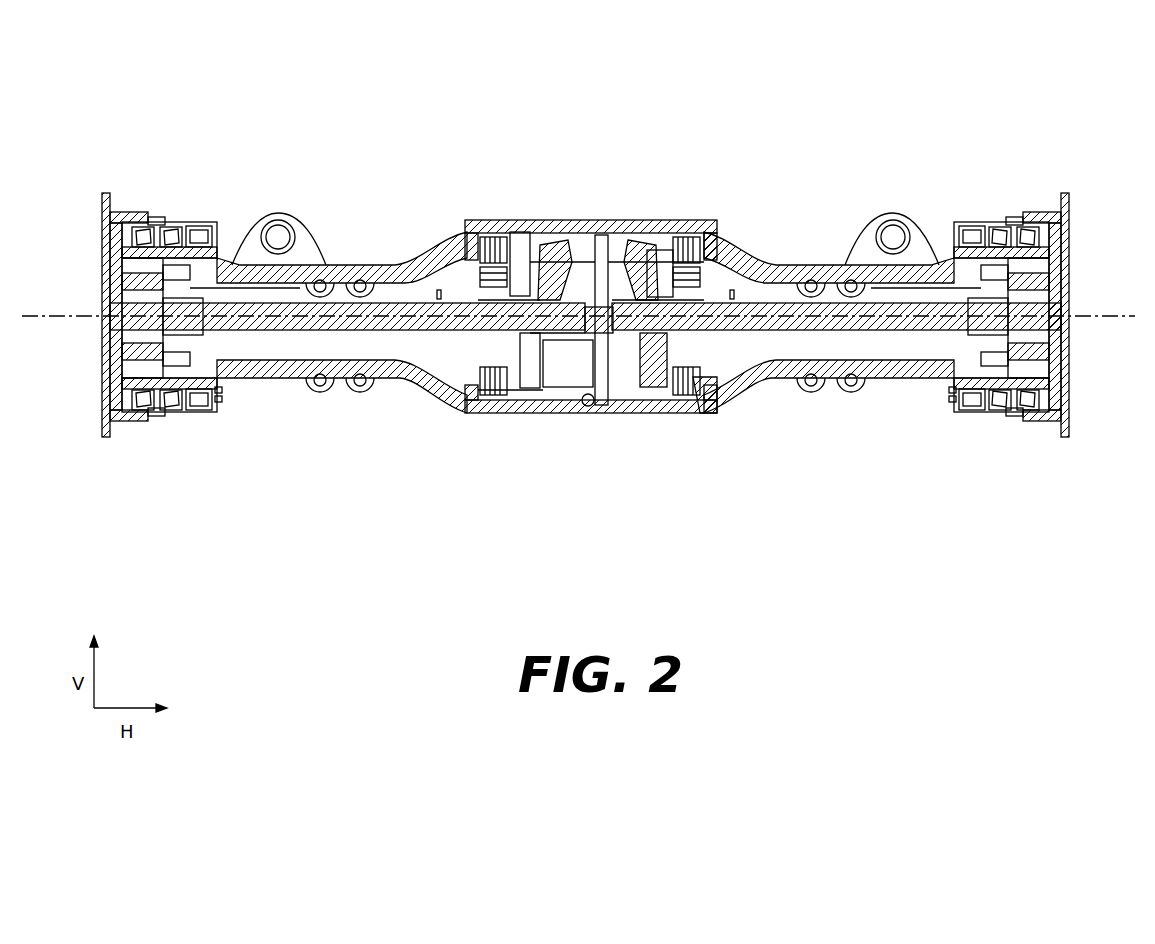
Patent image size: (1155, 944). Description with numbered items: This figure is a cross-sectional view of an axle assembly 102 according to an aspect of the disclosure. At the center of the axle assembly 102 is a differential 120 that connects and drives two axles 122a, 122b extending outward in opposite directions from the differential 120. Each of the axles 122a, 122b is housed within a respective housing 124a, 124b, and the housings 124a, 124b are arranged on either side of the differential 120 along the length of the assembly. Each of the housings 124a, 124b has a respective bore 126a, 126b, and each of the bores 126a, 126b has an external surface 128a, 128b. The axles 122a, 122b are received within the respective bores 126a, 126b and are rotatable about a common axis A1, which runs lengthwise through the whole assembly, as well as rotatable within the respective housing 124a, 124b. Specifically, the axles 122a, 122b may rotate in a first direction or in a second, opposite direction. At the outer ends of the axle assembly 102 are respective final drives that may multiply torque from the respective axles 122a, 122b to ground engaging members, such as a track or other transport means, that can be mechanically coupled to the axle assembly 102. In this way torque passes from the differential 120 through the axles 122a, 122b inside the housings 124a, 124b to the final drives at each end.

The axle assembly 102 is at (694, 72).
The differential 120 is at (600, 222).
The axle 122a is at (385, 320).
The axle 122b is at (768, 318).
The housing 124a is at (437, 372).
The housing 124b is at (735, 378).
The bore 126a is at (402, 296).
The bore 126b is at (754, 296).
The external surface 128a is at (356, 264).
The external surface 128b is at (817, 264).
The axis A1 is at (34, 318).